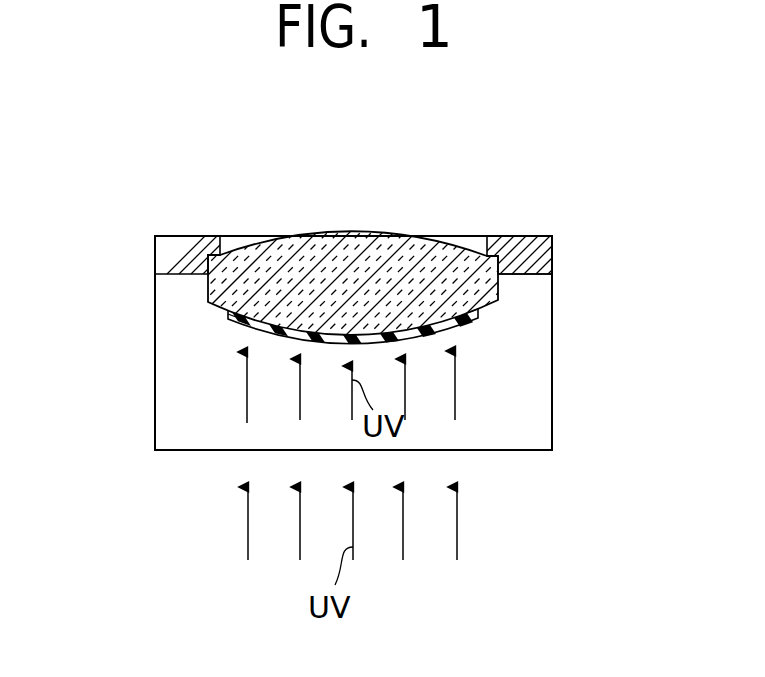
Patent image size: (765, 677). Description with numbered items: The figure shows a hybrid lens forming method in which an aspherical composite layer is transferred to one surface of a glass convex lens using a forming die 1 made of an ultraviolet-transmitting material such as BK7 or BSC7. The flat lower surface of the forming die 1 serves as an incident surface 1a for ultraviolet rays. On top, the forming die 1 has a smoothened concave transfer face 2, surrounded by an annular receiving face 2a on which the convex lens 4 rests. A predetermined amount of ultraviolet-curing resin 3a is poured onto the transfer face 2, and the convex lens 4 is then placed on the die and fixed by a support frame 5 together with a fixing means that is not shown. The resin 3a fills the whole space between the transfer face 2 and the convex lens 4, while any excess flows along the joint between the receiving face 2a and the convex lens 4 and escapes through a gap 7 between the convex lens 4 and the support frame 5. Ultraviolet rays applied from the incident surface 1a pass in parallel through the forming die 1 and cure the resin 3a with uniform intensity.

The forming die 1 is at (168, 367).
The incident surface 1a is at (440, 450).
The transfer face 2 is at (315, 341).
The receiving face 2a is at (478, 322).
The ultraviolet-curing resin 3a is at (232, 325).
The convex lens 4 is at (362, 262).
The support frame 5 is at (537, 237).
The gap 7 is at (513, 275).